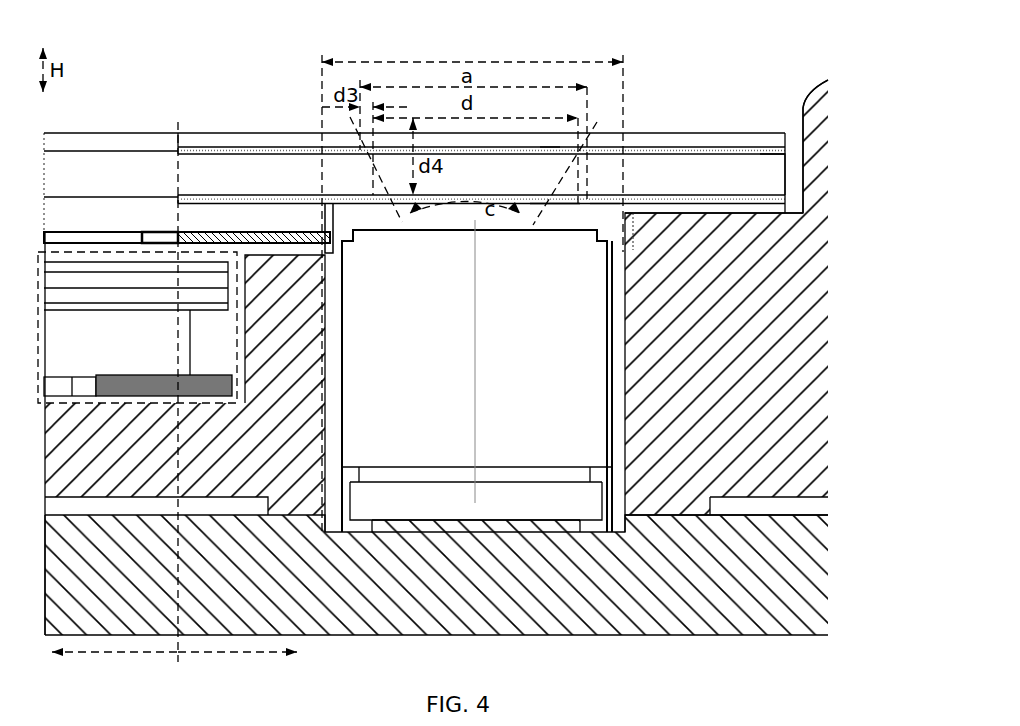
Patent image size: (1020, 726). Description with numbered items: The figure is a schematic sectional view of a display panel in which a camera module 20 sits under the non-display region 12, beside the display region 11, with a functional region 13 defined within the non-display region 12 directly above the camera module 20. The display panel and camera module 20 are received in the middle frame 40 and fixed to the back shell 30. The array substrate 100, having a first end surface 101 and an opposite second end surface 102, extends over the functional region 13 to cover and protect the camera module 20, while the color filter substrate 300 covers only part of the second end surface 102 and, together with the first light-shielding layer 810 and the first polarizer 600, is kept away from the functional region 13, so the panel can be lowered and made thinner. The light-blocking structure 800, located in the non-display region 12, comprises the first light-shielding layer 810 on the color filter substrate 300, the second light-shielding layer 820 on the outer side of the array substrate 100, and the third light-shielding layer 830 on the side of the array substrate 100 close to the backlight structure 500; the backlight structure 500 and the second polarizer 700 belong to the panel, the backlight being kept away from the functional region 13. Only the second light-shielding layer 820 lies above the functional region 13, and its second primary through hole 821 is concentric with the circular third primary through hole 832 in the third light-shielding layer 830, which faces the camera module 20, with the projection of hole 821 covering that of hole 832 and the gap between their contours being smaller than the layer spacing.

The camera module 20 is at (541, 430).
The back shell 30 is at (622, 563).
The middle frame 40 is at (290, 470).
The array substrate 100 is at (275, 170).
The first end surface 101 is at (752, 152).
The second end surface 102 is at (605, 203).
The color filter substrate 300 is at (197, 213).
The backlight structure 500 is at (98, 250).
The first polarizer 600 is at (54, 232).
The second polarizer 700 is at (773, 132).
The light-blocking structure 800 is at (205, 97).
The first light-shielding layer 810 is at (178, 185).
The second light-shielding layer 820 is at (190, 150).
The second primary through hole 821 is at (548, 148).
The third light-shielding layer 830 is at (638, 197).
The third primary through hole 832 is at (553, 204).
The display region 11 is at (115, 405).
The non-display region 12 is at (237, 668).
The functional region 13 is at (472, 285).